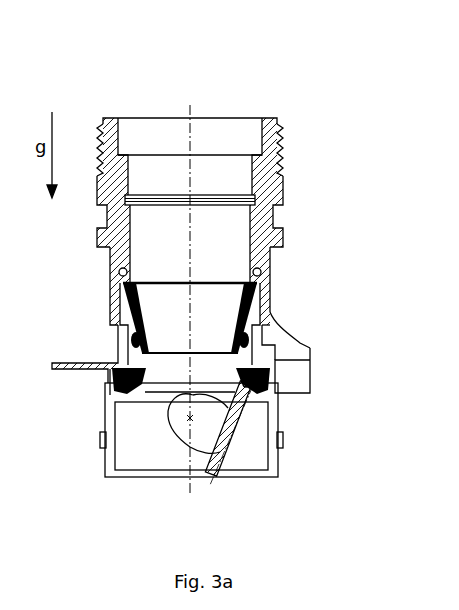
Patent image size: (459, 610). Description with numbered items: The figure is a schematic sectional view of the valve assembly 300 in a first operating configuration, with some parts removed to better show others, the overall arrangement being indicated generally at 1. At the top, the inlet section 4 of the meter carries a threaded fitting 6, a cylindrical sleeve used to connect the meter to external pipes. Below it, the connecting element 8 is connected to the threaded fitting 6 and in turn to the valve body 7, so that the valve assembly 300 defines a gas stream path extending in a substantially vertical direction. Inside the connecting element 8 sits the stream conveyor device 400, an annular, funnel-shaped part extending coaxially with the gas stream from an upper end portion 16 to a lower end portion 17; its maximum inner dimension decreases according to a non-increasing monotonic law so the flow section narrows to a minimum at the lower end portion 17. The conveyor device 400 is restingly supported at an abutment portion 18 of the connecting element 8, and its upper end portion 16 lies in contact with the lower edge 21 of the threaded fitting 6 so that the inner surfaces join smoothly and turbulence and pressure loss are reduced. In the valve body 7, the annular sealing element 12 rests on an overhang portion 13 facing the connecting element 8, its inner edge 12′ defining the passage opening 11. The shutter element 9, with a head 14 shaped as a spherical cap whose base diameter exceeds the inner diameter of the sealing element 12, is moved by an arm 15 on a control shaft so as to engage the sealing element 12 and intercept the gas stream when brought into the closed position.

The fluid dispensing device 1 is at (455, 400).
The inlet section 4 is at (190, 141).
The threaded fitting 6 is at (222, 143).
The valve body 7 is at (97, 451).
The connecting element 8 is at (193, 296).
The shutter element 9 is at (250, 440).
The passage opening 11 is at (262, 412).
The sealing element 12 is at (80, 341).
The inner edge 12′ is at (191, 372).
The overhang portion 13 is at (64, 392).
The head 14 is at (255, 455).
The arm 15 is at (179, 424).
The upper end portion 16 is at (190, 318).
The lower end portion 17 is at (190, 335).
The abutment portion 18 is at (307, 312).
The lower edge 21 is at (190, 248).
The valve assembly 300 is at (302, 318).
The stream conveyor device 400 is at (228, 299).